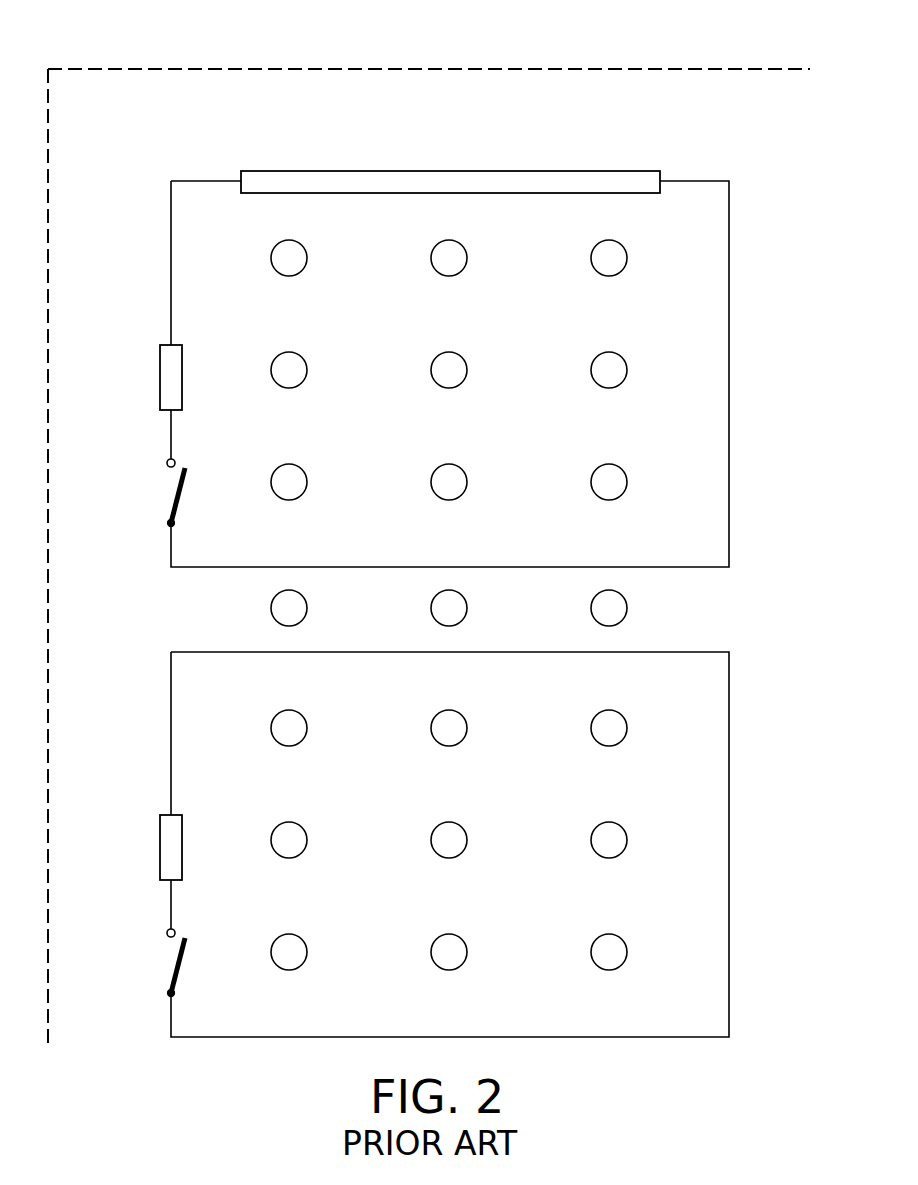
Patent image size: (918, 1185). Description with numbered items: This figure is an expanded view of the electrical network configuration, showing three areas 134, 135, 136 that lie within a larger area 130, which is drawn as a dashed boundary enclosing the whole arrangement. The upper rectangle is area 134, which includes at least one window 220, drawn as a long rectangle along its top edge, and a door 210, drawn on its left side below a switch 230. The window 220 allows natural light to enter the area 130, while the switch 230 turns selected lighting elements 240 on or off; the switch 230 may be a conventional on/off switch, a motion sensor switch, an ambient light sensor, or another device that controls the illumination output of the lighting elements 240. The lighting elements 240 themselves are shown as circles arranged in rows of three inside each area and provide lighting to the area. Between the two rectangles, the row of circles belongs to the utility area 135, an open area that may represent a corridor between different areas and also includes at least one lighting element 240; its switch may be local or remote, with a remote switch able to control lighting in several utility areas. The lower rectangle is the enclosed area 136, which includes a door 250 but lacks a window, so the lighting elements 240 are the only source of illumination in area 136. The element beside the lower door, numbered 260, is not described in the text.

The area 130 is at (168, 68).
The area 134 is at (730, 366).
The utility area 135 is at (730, 630).
The enclosed area 136 is at (730, 779).
The door 210 is at (170, 491).
The window 220 is at (376, 170).
The switch 230 is at (160, 375).
The lighting element 240 is at (307, 259).
The door 250 is at (170, 959).
The second resistor 260 is at (160, 844).